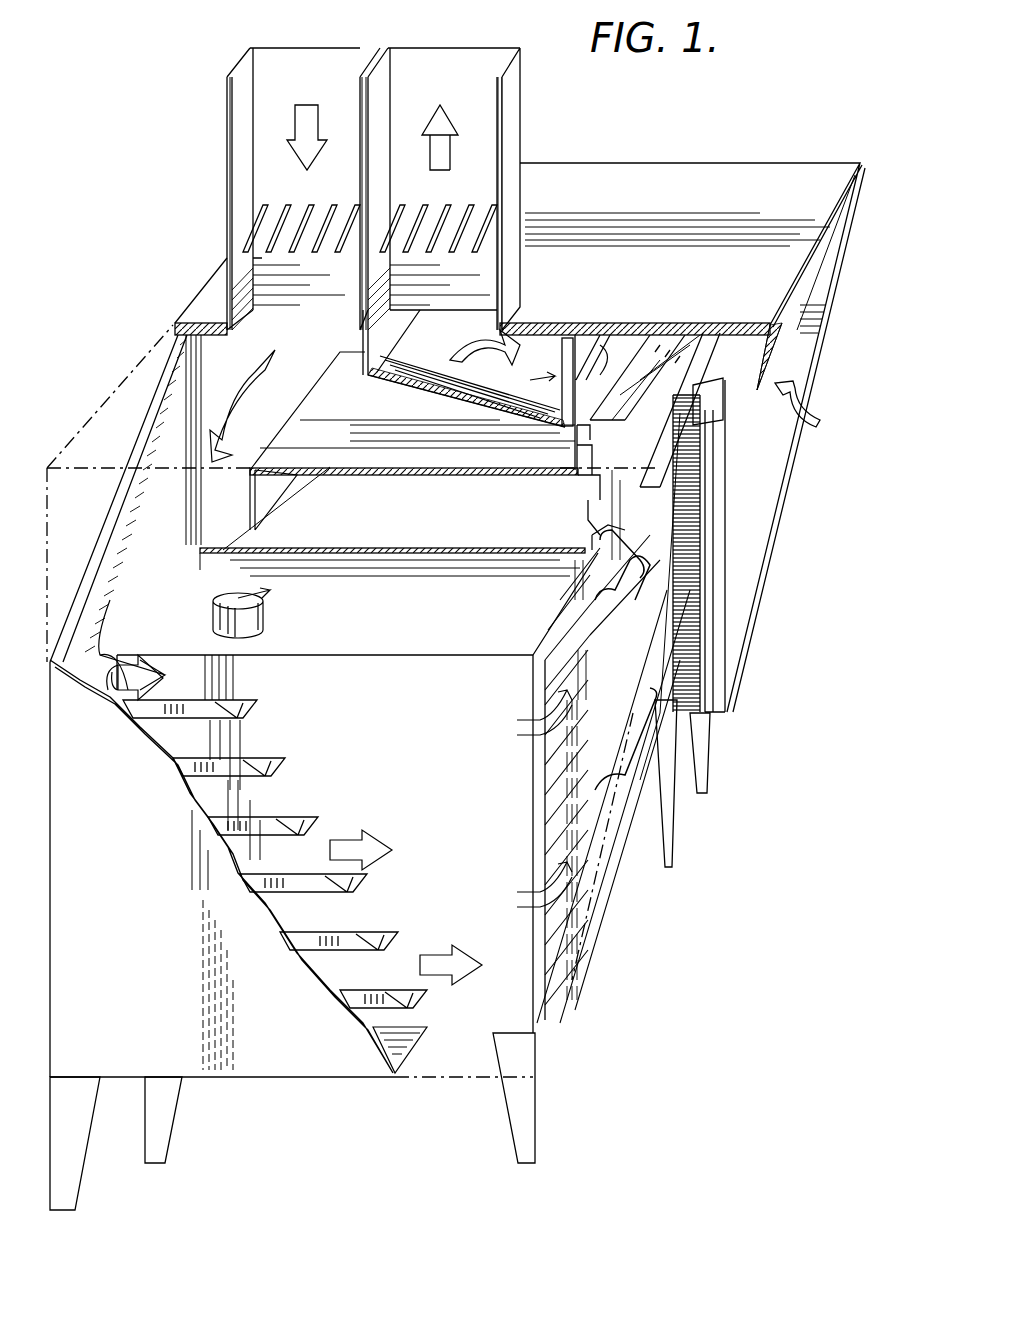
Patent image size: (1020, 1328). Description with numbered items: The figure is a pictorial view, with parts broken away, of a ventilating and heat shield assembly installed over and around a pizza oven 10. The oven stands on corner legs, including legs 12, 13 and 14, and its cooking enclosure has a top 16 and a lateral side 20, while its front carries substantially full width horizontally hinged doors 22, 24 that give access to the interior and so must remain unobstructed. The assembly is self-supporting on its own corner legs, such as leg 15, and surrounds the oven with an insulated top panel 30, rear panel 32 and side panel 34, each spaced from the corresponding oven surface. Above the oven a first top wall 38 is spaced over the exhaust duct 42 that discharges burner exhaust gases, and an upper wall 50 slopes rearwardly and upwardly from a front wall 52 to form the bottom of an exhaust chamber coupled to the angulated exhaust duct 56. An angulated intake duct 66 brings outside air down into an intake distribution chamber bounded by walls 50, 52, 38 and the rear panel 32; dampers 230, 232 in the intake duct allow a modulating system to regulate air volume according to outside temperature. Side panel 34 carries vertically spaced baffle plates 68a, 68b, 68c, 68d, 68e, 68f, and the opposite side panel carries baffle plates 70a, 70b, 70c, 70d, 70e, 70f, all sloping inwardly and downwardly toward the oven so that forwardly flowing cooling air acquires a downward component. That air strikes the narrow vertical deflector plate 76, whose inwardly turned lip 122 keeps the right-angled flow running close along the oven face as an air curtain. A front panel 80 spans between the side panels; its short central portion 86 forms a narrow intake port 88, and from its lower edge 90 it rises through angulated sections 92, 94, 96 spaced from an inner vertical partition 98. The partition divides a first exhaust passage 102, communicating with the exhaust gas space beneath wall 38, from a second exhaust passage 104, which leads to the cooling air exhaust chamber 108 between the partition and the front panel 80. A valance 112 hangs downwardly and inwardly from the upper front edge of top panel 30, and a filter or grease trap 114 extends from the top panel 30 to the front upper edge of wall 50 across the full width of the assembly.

The pizza oven 10 is at (435, 1115).
The leg 12 is at (545, 1115).
The leg 13 is at (680, 830).
The leg 14 is at (180, 1113).
The corner leg 15 is at (82, 1166).
The top 16 is at (393, 594).
The lateral side 20 is at (427, 774).
The horizontally hinged door 22 is at (592, 667).
The horizontally hinged door 24 is at (592, 826).
The top panel 30 is at (708, 160).
The rear panel 32 is at (122, 518).
The side panel 34 is at (182, 954).
The first top wall 38 is at (397, 477).
The exhaust duct 42 is at (262, 628).
The upper wall 50 is at (428, 392).
The front wall 52 is at (576, 450).
The exhaust duct 56 is at (522, 122).
The intake duct 66 is at (228, 150).
The baffle plate 68a is at (250, 715).
The baffle plate 68b is at (282, 757).
The baffle plate 68c is at (314, 815).
The baffle plate 68d is at (367, 878).
The baffle plate 68e is at (394, 932).
The baffle plate 68f is at (427, 995).
The baffle plate 70a is at (700, 440).
The baffle plate 70b is at (700, 485).
The baffle plate 70c is at (700, 535).
The baffle plate 70d is at (700, 585).
The baffle plate 70e is at (700, 638).
The baffle plate 70f is at (700, 688).
The deflector plate 76 is at (722, 462).
The front panel 80 is at (698, 373).
The central portion 86 is at (620, 540).
The intake port 88 is at (617, 586).
The lower edge 90 is at (723, 405).
The angulated section 92 is at (688, 358).
The angulated section 94 is at (688, 340).
The angulated section 96 is at (655, 335).
The inner vertical partition 98 is at (592, 538).
The first exhaust passage 102 is at (577, 480).
The second exhaust passage 104 is at (576, 432).
The cooling air exhaust chamber 108 is at (592, 514).
The valance 112 is at (820, 280).
The filter or grease trap 114 is at (560, 350).
The inwardly turned lip 122 is at (703, 505).
The damper 230 is at (241, 203).
The damper 232 is at (490, 204).